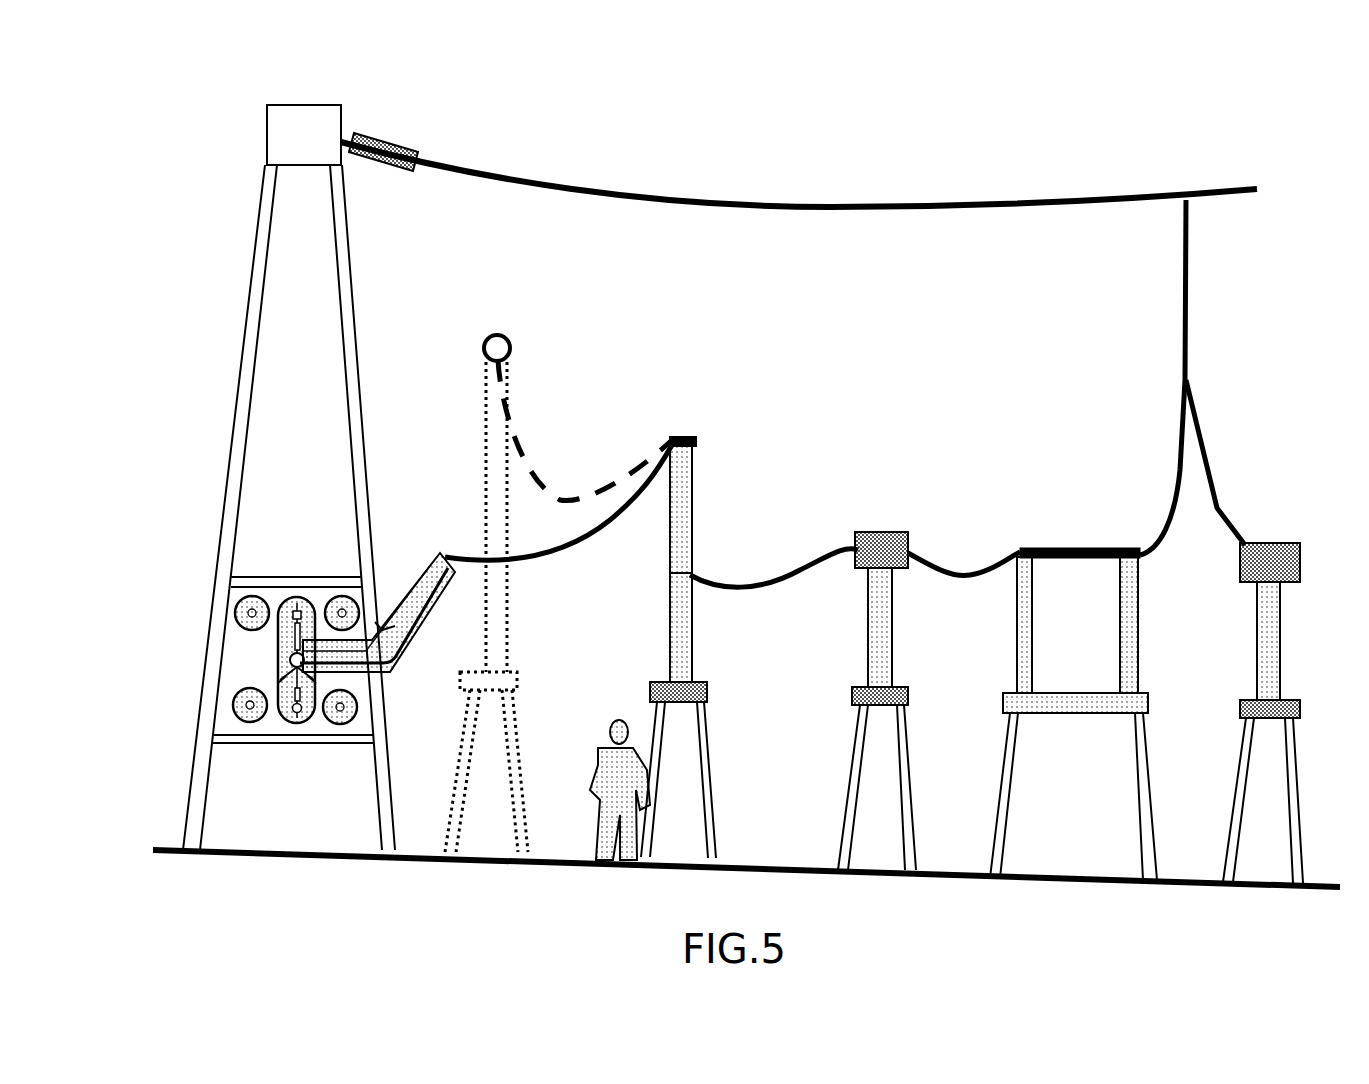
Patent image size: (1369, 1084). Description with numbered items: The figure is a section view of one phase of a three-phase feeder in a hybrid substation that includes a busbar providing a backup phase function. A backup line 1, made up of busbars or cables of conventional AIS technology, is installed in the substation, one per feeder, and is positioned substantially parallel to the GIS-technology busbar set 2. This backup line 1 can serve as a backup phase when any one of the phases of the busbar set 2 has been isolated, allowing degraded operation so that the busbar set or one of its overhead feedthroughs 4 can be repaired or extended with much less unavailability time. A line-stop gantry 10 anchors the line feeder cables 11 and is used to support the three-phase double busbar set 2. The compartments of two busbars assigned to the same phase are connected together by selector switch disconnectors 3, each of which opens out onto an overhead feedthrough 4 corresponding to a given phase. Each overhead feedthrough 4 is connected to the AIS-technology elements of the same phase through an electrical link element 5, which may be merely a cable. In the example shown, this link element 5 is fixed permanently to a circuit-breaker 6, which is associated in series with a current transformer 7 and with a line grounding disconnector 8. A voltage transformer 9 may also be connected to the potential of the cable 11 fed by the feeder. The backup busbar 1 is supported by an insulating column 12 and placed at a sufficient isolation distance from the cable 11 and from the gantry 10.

The backup line 1 is at (511, 329).
The busbar set 2 is at (246, 666).
The selector switch disconnector 3 is at (297, 733).
The overhead feedthrough 4 is at (404, 556).
The electrical link element 5 is at (576, 551).
The circuit-breaker 6 is at (700, 484).
The current transformer 7 is at (891, 527).
The line grounding disconnector 8 is at (1060, 534).
The voltage transformer 9 is at (1270, 534).
The line-stop gantry 10 is at (243, 302).
The line feeder cable 11 is at (786, 186).
The insulating column 12 is at (513, 647).